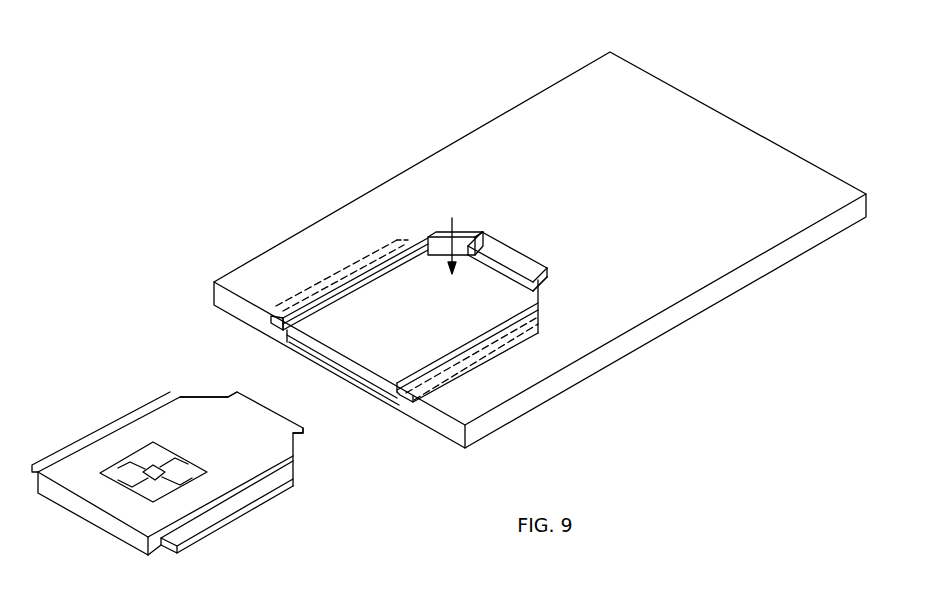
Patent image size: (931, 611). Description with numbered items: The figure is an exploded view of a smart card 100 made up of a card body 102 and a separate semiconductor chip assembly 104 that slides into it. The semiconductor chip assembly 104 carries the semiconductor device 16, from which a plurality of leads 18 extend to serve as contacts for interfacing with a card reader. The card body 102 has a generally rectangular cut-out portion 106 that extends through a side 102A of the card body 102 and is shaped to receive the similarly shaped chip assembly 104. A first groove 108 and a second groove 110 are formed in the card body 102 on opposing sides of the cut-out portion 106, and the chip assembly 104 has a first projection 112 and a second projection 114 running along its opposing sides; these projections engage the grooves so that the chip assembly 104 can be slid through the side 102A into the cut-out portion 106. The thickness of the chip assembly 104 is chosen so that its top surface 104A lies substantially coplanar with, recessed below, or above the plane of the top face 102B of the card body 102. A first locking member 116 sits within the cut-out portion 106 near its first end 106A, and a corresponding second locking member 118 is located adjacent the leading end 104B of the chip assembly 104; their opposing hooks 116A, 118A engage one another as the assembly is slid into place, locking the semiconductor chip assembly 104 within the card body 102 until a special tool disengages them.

The smart card 100 is at (758, 84).
The card body 102 is at (677, 104).
The side of the card body 102A is at (440, 420).
The top face of the card body 102B is at (818, 181).
The semiconductor chip assembly 104 is at (177, 397).
The top surface of the semiconductor chip assembly 104A is at (110, 512).
The leading end of the semiconductor chip assembly 104B is at (343, 380).
The cut-out portion 106 is at (443, 248).
The first end of the cut-out portion 106A is at (485, 236).
The first groove 108 is at (281, 338).
The second groove 110 is at (400, 403).
The first projection 112 is at (68, 450).
The second projection 114 is at (240, 500).
The first locking member 116 is at (518, 270).
The hook of the first locking member 116A is at (543, 285).
The second locking member 118 is at (242, 397).
The hook of the second locking member 118A is at (302, 434).
The semiconductor device 16 is at (161, 470).
The leads 18 is at (133, 463).